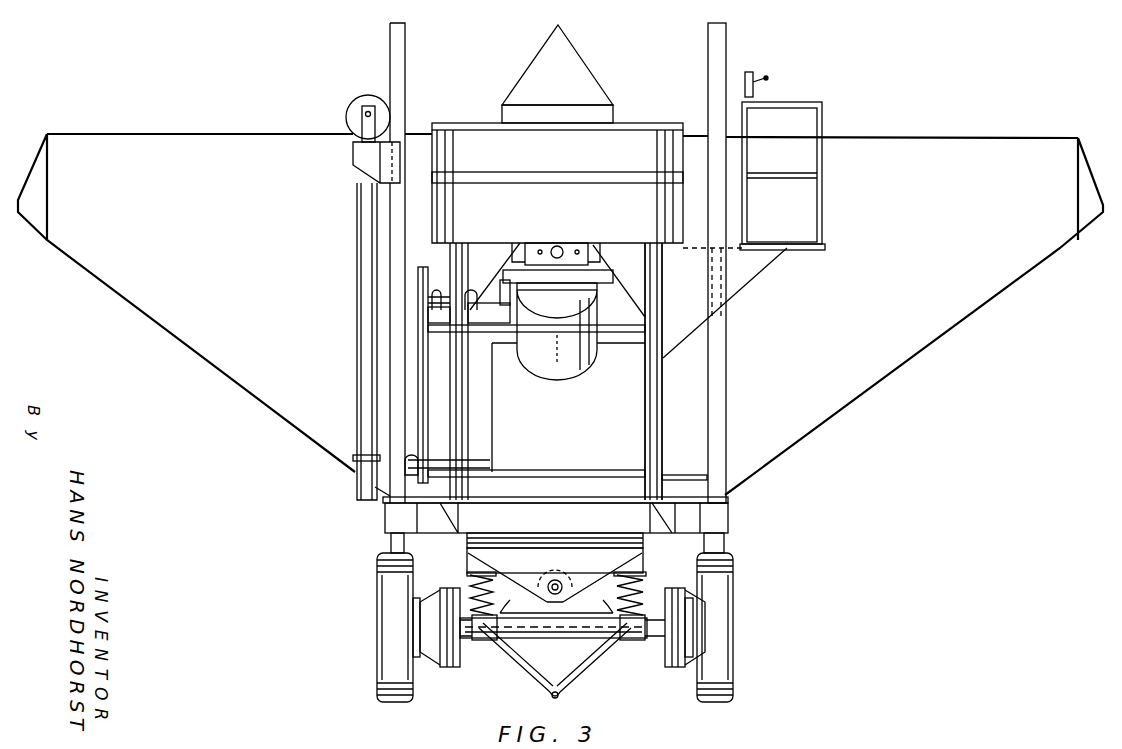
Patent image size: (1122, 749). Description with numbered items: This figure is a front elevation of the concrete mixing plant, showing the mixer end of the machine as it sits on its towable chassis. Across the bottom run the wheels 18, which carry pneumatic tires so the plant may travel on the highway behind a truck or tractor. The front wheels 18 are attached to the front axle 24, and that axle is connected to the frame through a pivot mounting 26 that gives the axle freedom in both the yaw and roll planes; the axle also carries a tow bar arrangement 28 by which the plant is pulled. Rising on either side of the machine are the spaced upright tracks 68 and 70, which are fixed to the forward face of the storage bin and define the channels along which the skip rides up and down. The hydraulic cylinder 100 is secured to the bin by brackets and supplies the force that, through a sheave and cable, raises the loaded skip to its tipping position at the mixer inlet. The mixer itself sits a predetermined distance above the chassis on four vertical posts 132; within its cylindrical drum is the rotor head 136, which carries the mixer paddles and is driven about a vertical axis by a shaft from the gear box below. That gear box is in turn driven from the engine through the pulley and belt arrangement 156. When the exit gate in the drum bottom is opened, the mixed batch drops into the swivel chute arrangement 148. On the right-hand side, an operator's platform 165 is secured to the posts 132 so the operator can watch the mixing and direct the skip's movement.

The wheels 18 is at (733, 688).
The front axle 24 is at (525, 632).
The pivot mounting 26 is at (566, 570).
The tow bar arrangement 28 is at (507, 651).
The upright track 68 is at (405, 62).
The upright track 70 is at (726, 47).
The hydraulic cylinder 100 is at (362, 270).
The vertical posts 132 is at (660, 403).
The rotor head 136 is at (584, 86).
The swivel chute arrangement 148 is at (527, 380).
The pulley and belt arrangement 156 is at (410, 338).
The operator's platform 165 is at (824, 230).